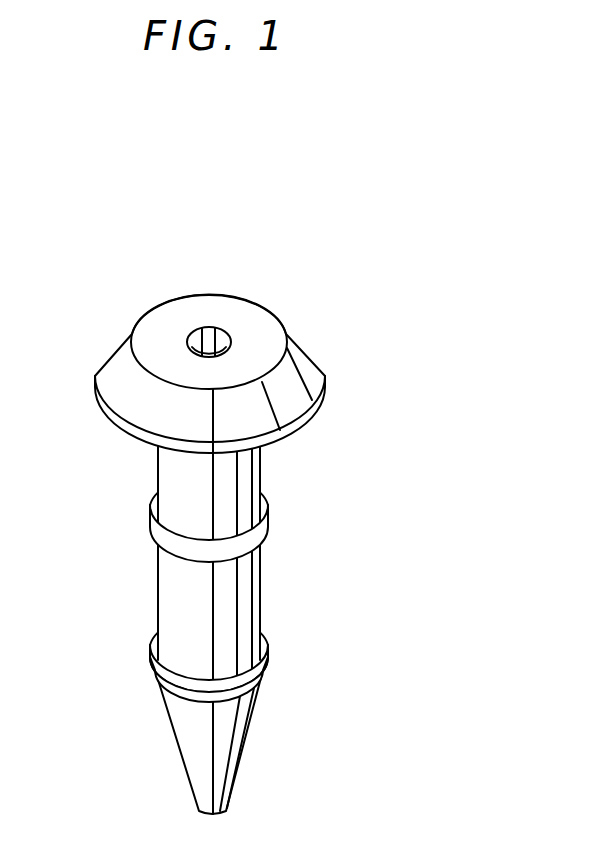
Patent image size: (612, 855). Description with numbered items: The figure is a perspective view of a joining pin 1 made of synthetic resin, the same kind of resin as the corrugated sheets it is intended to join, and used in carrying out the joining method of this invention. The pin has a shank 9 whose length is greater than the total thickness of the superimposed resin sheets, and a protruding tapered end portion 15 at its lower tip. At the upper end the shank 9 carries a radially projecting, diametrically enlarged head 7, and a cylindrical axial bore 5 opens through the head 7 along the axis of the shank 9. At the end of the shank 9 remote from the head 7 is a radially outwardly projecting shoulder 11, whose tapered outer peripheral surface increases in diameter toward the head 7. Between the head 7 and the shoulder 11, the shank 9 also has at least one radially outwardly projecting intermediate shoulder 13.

The joining pin 1 is at (343, 441).
The cylindrical axial bore 5 is at (218, 342).
The head 7 is at (195, 353).
The shank 9 is at (243, 615).
The shoulder 11 is at (158, 681).
The intermediate shoulder 13 is at (160, 540).
The tapered end portion 15 is at (236, 760).